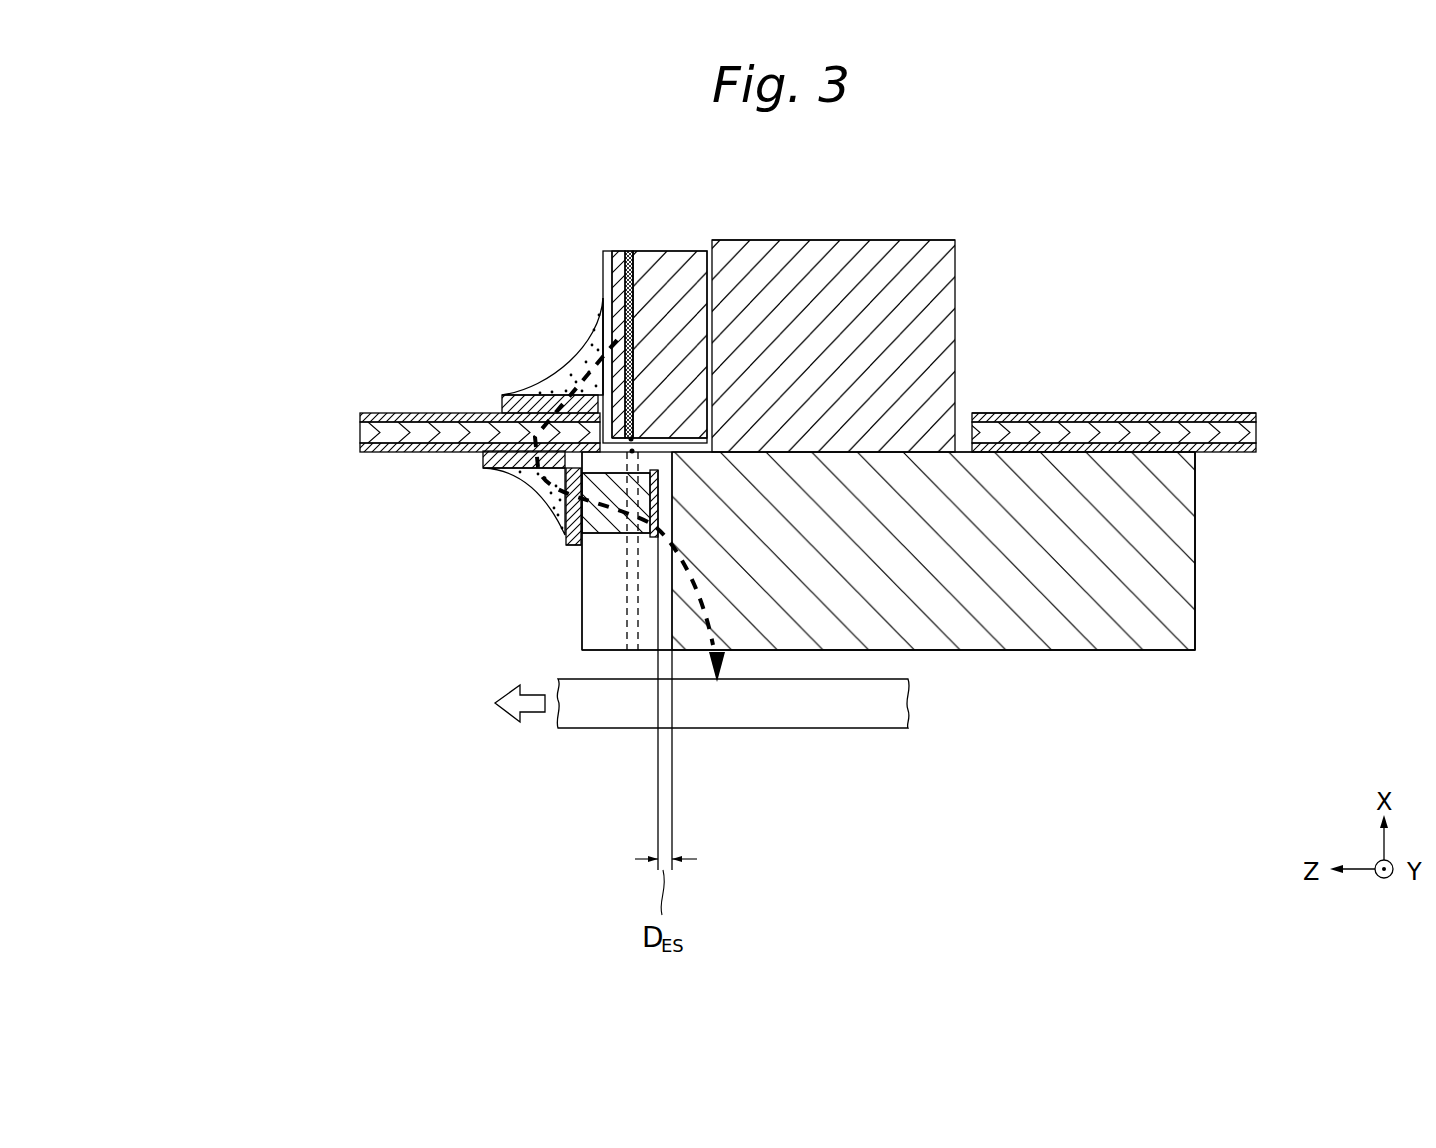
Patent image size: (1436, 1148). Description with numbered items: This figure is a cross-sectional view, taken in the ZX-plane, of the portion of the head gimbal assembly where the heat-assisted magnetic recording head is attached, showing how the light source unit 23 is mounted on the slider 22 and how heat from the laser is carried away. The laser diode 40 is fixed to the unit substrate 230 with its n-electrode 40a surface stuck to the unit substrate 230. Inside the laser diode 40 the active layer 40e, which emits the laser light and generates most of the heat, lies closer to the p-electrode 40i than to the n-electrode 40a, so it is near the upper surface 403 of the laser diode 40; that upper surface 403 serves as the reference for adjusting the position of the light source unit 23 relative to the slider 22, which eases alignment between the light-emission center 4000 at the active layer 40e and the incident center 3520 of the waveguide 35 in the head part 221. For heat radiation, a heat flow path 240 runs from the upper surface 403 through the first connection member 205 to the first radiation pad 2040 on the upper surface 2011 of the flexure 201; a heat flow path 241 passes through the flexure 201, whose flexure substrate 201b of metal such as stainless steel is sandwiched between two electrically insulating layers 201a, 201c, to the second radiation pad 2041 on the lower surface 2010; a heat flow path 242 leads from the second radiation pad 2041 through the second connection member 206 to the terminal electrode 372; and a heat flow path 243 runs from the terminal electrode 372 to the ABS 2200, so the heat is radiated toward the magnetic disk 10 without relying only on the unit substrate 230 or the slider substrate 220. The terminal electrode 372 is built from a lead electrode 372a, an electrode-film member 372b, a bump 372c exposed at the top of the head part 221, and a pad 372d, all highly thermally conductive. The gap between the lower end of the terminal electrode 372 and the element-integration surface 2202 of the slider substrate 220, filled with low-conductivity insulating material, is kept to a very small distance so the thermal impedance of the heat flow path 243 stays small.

The magnetic disk 10 is at (906, 705).
The slider 22 is at (782, 680).
The light source unit 23 is at (972, 220).
The waveguide 35 is at (633, 652).
The laser diode 40 is at (621, 288).
The n-electrode 40a is at (697, 360).
The active layer 40e is at (634, 330).
The p-electrode 40i is at (615, 290).
The light-emission center 4000 is at (674, 380).
The upper surface of the laser diode 403 is at (603, 290).
The flexure 201 is at (751, 396).
The electrically insulating layer 201a is at (530, 440).
The flexure substrate 201b is at (370, 432).
The electrically insulating layer 201c is at (370, 412).
The lower surface of the flexure 2010 is at (1073, 453).
The upper surface of the flexure 2011 is at (1113, 412).
The first connection member 205 is at (603, 312).
The second connection member 206 is at (565, 548).
The slider substrate 220 is at (1185, 540).
The head part 221 is at (600, 640).
The ABS 2200 is at (1045, 650).
The element-integration surface 2202 is at (667, 623).
The unit substrate 230 is at (828, 240).
The heat flow path 240 is at (582, 356).
The first radiation pad 2040 is at (503, 394).
The heat flow path 241 is at (483, 468).
The second radiation pad 2041 is at (558, 503).
The heat flow path 242 is at (567, 533).
The heat flow path 243 is at (670, 537).
The incident center of the waveguide 3520 is at (670, 453).
The terminal electrode 372 is at (441, 625).
The lead electrode 372a is at (630, 540).
The electrode-film member 372b is at (622, 537).
The bump 372c is at (613, 535).
The pad 372d is at (603, 522).